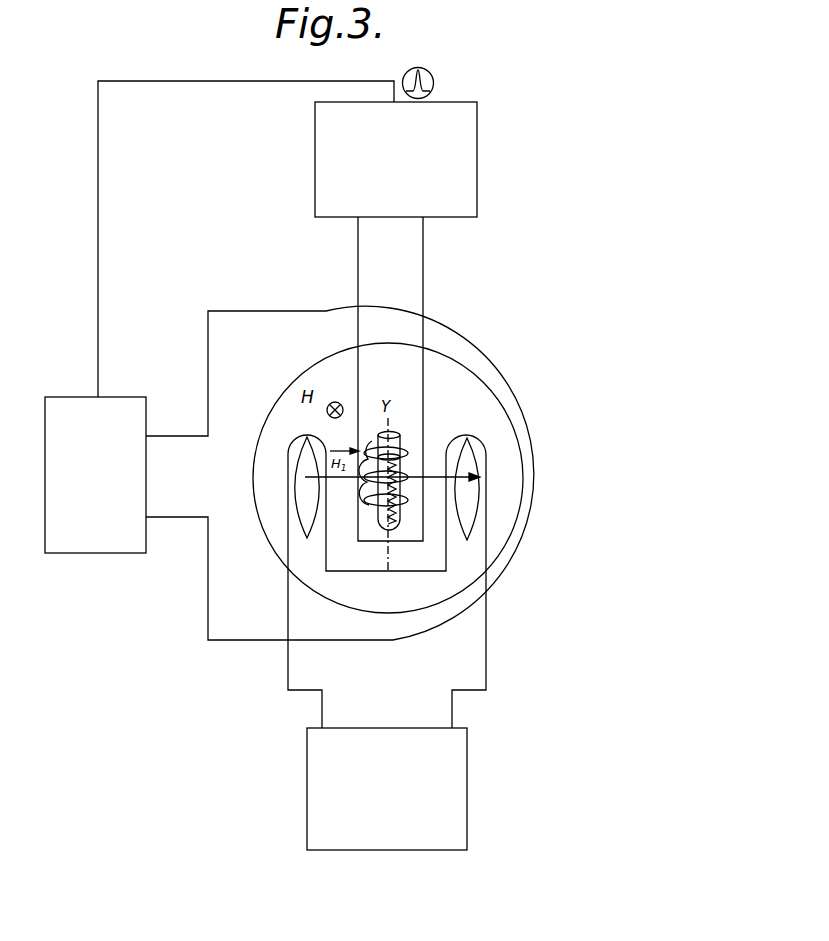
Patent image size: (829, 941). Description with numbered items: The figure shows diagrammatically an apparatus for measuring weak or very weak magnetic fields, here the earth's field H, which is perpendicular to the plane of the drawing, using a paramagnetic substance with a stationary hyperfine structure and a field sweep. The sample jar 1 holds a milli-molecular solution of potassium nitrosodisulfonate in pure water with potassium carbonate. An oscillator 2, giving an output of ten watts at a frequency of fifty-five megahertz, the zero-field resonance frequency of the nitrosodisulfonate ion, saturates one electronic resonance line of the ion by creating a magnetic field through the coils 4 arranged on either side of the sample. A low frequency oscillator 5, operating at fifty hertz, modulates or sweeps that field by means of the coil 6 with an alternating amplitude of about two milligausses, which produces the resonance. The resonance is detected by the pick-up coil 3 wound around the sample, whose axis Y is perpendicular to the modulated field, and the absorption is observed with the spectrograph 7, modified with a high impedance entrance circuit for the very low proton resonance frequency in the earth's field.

The sample jar 1 is at (390, 438).
The oscillator 2 is at (448, 778).
The pick-up coil 3 is at (400, 500).
The coils 4 is at (297, 514).
The low frequency oscillator 5 is at (109, 523).
The coil 6 is at (470, 363).
The spectrograph 7 is at (448, 147).